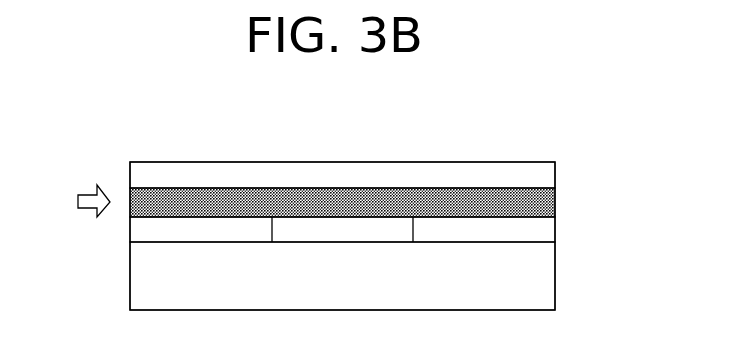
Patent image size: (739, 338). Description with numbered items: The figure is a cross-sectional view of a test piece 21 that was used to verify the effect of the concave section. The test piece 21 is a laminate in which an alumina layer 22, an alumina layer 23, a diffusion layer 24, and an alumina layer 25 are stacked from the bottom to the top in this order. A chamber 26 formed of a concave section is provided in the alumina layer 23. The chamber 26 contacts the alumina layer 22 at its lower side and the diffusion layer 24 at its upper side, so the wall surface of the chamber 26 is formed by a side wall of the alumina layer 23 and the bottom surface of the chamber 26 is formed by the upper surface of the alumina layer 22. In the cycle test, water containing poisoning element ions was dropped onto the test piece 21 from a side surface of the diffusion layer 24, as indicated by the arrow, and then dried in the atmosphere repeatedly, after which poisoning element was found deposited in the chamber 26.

The test piece 21 is at (532, 132).
The alumina layer 22 is at (523, 288).
The alumina layer 23 is at (525, 231).
The diffusion layer 24 is at (555, 200).
The alumina layer 25 is at (298, 173).
The chamber 26 is at (345, 230).